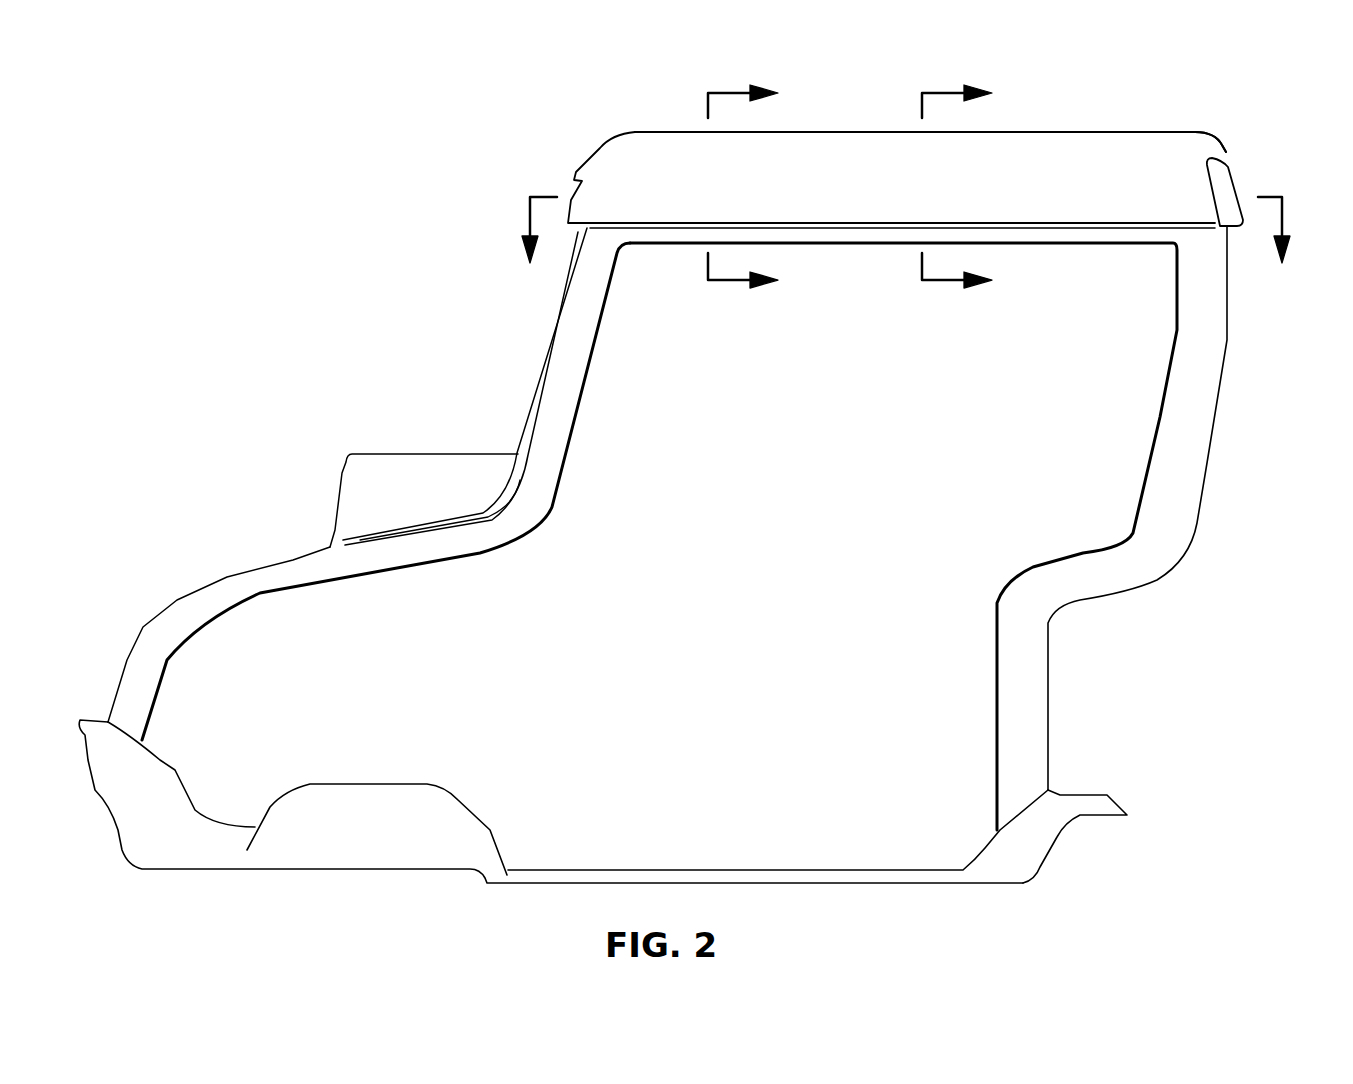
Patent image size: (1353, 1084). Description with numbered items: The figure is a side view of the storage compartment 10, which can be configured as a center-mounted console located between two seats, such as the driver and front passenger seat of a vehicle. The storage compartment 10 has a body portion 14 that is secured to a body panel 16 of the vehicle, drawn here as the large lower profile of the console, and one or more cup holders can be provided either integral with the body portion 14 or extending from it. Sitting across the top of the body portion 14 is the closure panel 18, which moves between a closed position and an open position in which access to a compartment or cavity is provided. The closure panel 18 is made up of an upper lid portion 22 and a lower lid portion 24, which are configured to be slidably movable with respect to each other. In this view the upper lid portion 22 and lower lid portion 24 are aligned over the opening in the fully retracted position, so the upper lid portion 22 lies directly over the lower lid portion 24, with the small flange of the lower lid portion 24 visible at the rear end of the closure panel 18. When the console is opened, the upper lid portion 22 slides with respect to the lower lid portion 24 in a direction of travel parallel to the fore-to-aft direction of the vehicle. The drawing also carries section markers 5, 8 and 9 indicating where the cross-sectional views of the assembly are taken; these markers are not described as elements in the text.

The storage compartment 10 is at (502, 433).
The body portion 14 is at (1202, 484).
The body panel 16 is at (160, 869).
The closure panel 18 is at (633, 130).
The upper lid portion 22 is at (1196, 131).
The lower lid portion 24 is at (1232, 165).
The section line 5 is at (965, 190).
The section line 8 is at (751, 190).
The section line 9 is at (905, 246).